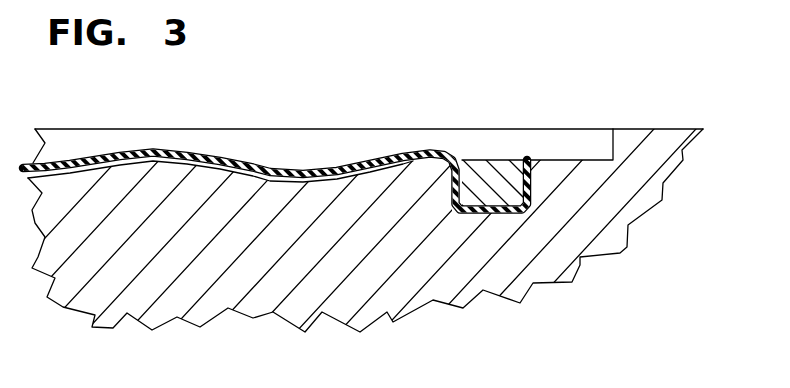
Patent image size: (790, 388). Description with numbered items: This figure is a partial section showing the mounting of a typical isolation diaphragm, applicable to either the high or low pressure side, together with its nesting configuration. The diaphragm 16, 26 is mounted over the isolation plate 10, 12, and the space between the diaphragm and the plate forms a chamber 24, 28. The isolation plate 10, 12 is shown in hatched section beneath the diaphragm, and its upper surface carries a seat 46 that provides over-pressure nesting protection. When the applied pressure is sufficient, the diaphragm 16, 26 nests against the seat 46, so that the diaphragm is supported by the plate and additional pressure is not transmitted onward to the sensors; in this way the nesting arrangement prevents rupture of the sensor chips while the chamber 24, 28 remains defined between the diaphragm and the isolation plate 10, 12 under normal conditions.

The isolation plate 10 is at (395, 252).
The isolation plate 12 is at (417, 270).
The diaphragm 16 is at (275, 141).
The diaphragm 26 is at (333, 168).
The chamber 24 is at (368, 125).
The chamber 28 is at (224, 160).
The seat 46 is at (180, 167).